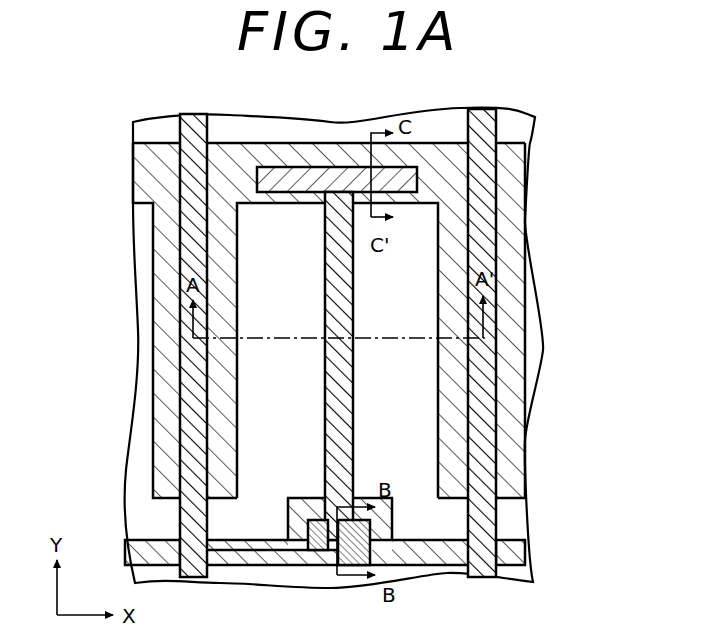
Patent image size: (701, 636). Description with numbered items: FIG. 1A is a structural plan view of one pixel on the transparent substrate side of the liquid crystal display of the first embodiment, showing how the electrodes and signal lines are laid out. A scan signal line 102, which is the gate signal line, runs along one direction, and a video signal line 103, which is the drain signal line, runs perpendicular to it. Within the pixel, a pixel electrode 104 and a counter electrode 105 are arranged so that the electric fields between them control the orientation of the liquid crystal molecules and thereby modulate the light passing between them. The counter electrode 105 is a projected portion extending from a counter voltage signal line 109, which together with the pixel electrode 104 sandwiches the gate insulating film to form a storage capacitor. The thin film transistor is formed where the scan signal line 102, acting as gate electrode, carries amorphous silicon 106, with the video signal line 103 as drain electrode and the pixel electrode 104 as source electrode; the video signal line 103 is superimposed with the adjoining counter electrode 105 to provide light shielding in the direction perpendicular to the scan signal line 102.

The scan signal line 102 is at (404, 537).
The video signal line 103 is at (198, 408).
The pixel electrode 104 is at (355, 408).
The counter electrode 105 is at (237, 352).
The amorphous silicon 106 is at (313, 512).
The counter voltage signal line 109 is at (272, 204).